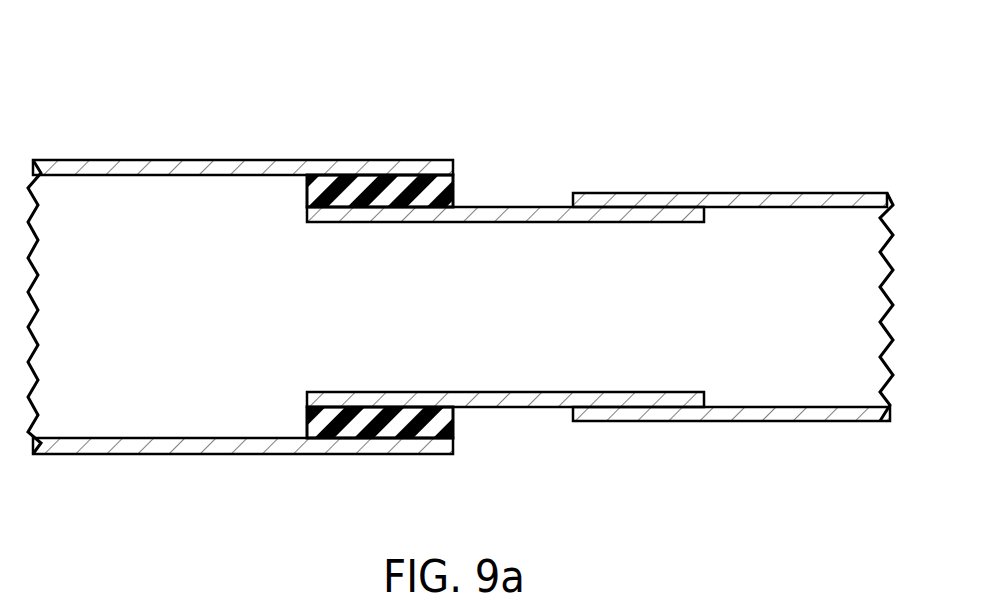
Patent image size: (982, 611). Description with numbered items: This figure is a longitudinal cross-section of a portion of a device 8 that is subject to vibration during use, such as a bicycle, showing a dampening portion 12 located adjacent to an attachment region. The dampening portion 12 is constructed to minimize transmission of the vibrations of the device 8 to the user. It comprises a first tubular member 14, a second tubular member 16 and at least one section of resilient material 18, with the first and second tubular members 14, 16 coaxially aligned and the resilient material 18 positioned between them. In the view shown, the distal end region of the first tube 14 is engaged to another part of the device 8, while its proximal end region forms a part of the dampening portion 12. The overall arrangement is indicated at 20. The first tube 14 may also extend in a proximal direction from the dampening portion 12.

The device 8 is at (722, 193).
The dampening portion 12 is at (423, 104).
The first tubular member 14 is at (531, 207).
The second tubular member 16 is at (143, 159).
The section of resilient material 18 is at (307, 193).
The tube assembly 20 is at (259, 44).